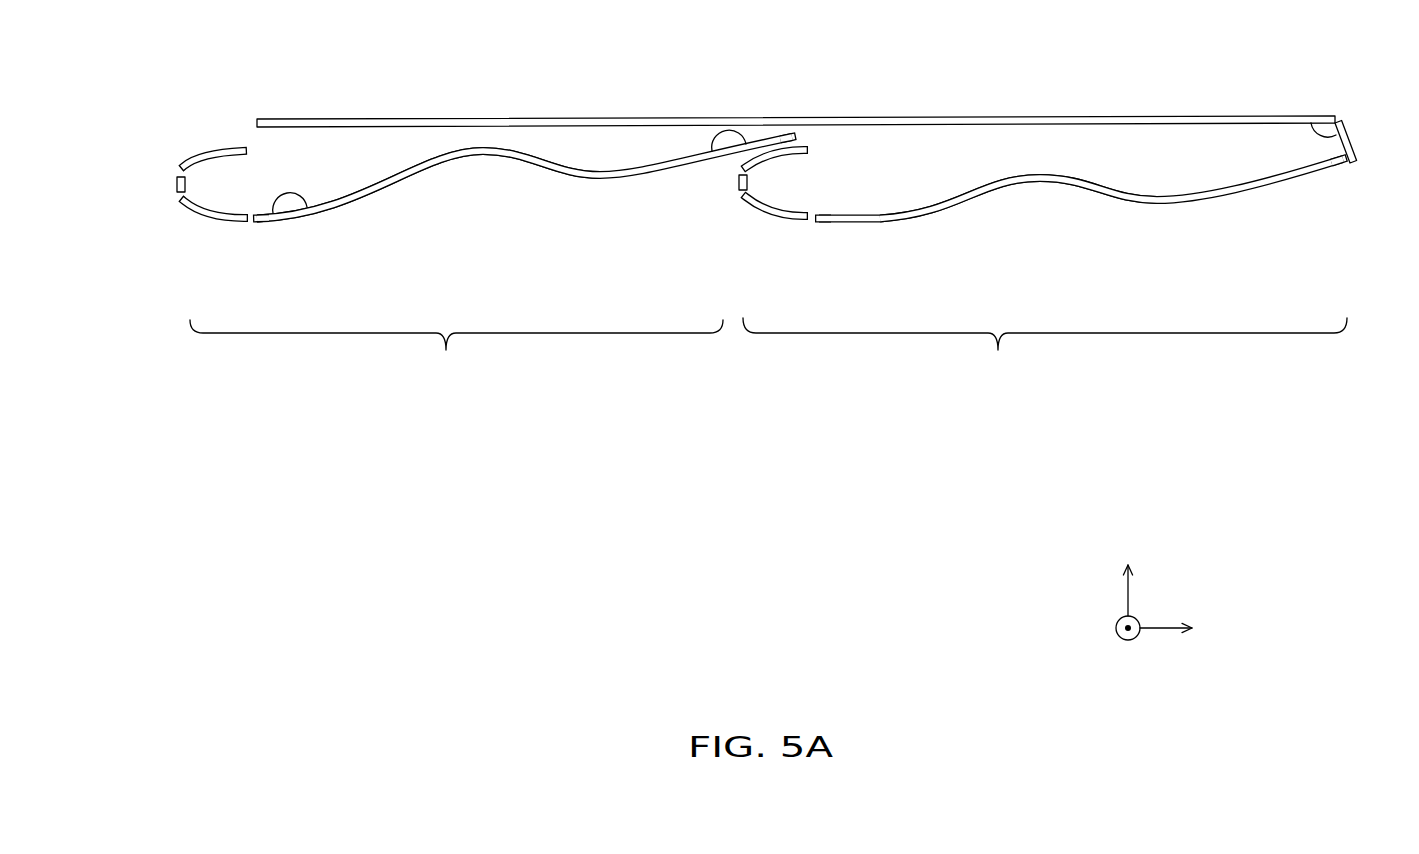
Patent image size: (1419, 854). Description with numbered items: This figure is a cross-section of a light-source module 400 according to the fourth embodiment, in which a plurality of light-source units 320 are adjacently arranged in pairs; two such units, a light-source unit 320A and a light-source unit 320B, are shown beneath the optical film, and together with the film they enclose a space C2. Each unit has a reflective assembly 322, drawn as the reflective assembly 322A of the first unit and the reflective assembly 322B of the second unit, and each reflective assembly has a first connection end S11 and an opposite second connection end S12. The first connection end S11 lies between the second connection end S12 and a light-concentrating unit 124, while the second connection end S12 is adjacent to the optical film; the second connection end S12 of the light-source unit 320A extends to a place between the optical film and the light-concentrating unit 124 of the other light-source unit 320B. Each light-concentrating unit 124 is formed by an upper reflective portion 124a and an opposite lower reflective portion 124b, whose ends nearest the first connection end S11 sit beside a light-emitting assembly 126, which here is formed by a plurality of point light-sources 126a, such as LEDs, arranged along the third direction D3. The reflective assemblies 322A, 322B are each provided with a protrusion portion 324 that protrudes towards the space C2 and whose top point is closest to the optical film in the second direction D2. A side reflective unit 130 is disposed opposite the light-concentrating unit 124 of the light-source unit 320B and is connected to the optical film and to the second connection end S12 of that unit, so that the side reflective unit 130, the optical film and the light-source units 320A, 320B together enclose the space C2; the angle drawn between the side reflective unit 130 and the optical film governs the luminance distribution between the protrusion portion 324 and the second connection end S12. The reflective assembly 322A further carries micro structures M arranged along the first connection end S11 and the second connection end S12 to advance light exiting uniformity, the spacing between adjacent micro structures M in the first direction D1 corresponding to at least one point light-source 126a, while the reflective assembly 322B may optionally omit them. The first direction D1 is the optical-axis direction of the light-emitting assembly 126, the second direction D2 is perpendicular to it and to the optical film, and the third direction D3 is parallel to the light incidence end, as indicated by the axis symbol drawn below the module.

The light-source module 400 is at (757, 378).
The light-source unit 320 is at (740, 378).
The light-source unit 320A is at (456, 362).
The light-source unit 320B is at (1045, 360).
The reflective assembly 322 is at (799, 326).
The reflective assembly 322A is at (614, 181).
The reflective assembly 322B is at (1188, 204).
The protrusion portion 324 is at (483, 172).
The first connection end S11 is at (257, 230).
The second connection end S12 is at (785, 128).
The light-concentrating unit 124 is at (519, 370).
The upper reflective portion 124a is at (231, 150).
The lower reflective portion 124b is at (219, 216).
The light-emitting assembly 126 is at (440, 405).
The point light-source 126a is at (179, 177).
The side reflective unit 130 is at (1349, 141).
The micro structure M is at (295, 201).
The space C2 is at (1026, 145).
The first direction D1 is at (1178, 632).
The second direction D2 is at (1127, 572).
The third direction D3 is at (1110, 632).